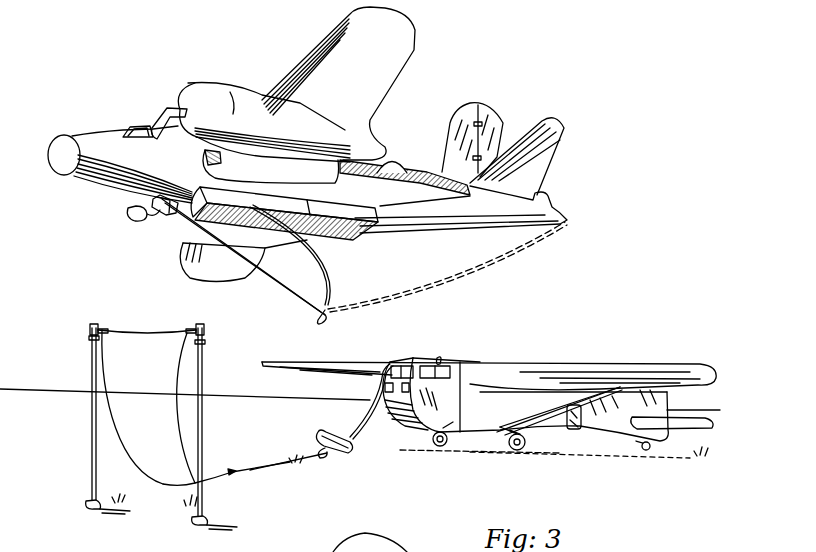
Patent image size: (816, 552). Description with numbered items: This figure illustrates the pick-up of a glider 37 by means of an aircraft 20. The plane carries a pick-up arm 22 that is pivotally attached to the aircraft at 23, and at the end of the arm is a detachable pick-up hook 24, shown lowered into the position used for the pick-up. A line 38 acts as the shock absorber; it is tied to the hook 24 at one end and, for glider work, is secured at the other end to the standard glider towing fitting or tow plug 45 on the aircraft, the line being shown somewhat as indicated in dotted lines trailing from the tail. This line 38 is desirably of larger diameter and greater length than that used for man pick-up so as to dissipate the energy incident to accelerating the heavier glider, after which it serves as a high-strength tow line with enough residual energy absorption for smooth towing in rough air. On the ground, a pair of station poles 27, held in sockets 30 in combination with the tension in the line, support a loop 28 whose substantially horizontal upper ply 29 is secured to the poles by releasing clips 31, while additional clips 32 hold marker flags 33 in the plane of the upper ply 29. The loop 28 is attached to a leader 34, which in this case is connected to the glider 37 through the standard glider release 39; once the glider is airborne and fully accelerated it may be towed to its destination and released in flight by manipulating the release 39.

The aircraft 20 is at (241, 89).
The pick-up arm 22 is at (285, 288).
The pivotal attachment 23 is at (163, 229).
The pick-up hook 24 is at (332, 320).
The station poles 27 is at (91, 447).
The loop 28 is at (160, 486).
The upper ply 29 is at (151, 335).
The sockets 30 is at (90, 510).
The releasing clips 31 is at (98, 326).
The clips 32 is at (106, 328).
The marker flags 33 is at (89, 337).
The leader 34 is at (340, 452).
The glider 37 is at (470, 372).
The line 38 is at (325, 266).
The glider release 39 is at (441, 357).
The glider tow plug 45 is at (570, 217).